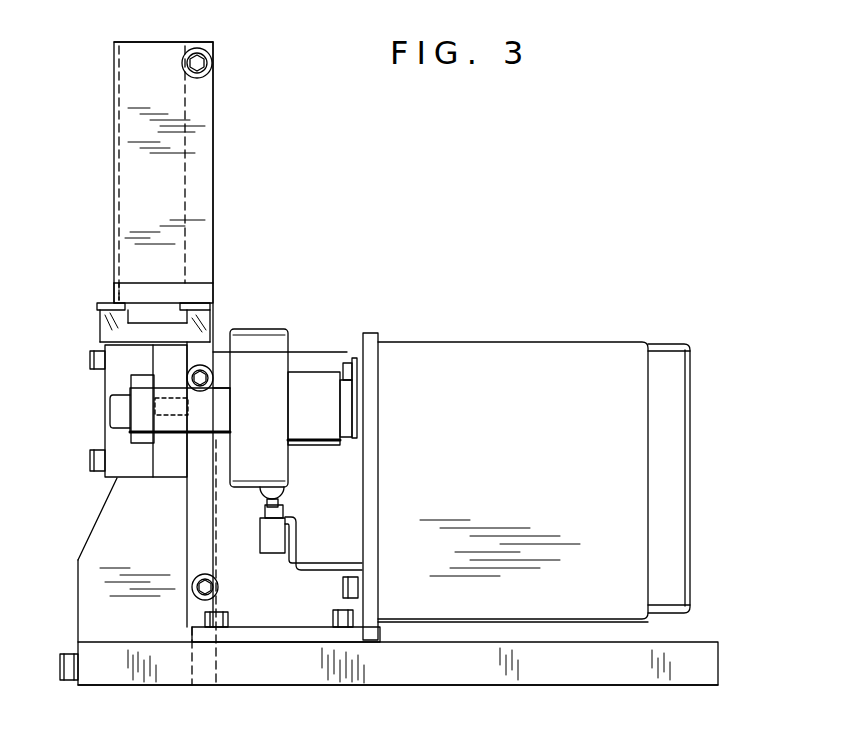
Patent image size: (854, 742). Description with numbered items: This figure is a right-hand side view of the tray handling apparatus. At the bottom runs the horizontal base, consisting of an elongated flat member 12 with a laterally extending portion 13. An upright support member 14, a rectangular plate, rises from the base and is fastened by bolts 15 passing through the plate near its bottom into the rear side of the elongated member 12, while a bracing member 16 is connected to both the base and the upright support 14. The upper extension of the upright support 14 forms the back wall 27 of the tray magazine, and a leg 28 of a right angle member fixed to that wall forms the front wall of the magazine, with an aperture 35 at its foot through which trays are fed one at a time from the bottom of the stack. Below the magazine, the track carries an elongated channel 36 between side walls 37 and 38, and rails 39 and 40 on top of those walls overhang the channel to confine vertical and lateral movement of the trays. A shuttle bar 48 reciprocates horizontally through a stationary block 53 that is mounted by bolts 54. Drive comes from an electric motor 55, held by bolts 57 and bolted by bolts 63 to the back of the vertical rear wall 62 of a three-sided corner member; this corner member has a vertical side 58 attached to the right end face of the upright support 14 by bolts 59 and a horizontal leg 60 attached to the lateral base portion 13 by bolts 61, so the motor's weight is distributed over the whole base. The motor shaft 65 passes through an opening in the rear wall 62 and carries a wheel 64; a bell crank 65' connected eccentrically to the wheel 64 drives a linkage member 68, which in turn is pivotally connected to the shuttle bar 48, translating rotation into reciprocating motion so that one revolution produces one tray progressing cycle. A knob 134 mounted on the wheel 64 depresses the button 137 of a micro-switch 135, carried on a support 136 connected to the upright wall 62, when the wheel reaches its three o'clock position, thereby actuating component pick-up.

The elongated flat member 12 is at (90, 677).
The laterally extending portion 13 is at (493, 663).
The upright support member 14 is at (213, 163).
The bolts 15 is at (62, 657).
The bracing member 16 is at (96, 560).
The back wall 27 is at (188, 42).
The leg 28 is at (140, 82).
The aperture 35 is at (114, 289).
The elongated channel 36 is at (126, 325).
The side wall 37 is at (100, 321).
The far side wall 38 is at (210, 318).
The rail 39 is at (96, 306).
The rail 40 is at (143, 296).
The shuttle bar 48 is at (146, 380).
The stationary block 53 is at (112, 449).
The bolts 54 is at (93, 373).
The electric motor 55 is at (554, 480).
The bolts 57 is at (218, 587).
The vertical side 58 is at (258, 574).
The bolts 59 is at (212, 66).
The horizontal leg 60 is at (292, 643).
The bolts 61 is at (228, 618).
The vertical rear wall 62 is at (372, 333).
The bolts 63 is at (345, 362).
The wheel 64 is at (276, 330).
The shaft 65 is at (269, 410).
The bell crank 65' is at (359, 401).
The linkage member 68 is at (165, 420).
The knob 134 is at (283, 493).
The micro-switch 135 is at (265, 533).
The support 136 is at (338, 569).
The button 137 is at (284, 509).